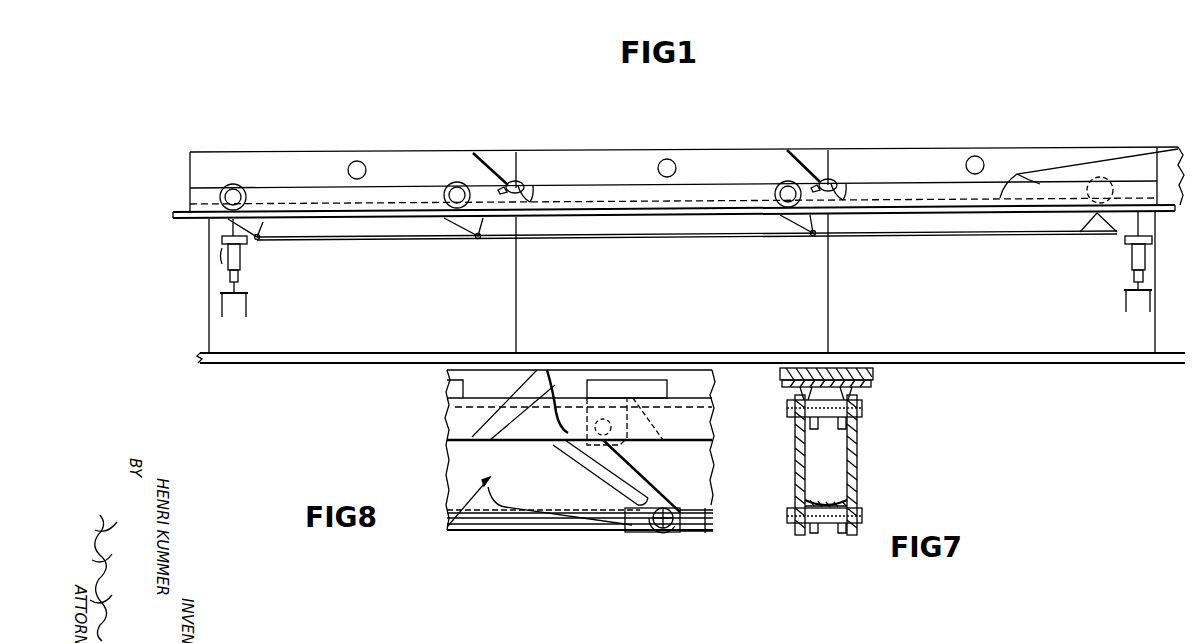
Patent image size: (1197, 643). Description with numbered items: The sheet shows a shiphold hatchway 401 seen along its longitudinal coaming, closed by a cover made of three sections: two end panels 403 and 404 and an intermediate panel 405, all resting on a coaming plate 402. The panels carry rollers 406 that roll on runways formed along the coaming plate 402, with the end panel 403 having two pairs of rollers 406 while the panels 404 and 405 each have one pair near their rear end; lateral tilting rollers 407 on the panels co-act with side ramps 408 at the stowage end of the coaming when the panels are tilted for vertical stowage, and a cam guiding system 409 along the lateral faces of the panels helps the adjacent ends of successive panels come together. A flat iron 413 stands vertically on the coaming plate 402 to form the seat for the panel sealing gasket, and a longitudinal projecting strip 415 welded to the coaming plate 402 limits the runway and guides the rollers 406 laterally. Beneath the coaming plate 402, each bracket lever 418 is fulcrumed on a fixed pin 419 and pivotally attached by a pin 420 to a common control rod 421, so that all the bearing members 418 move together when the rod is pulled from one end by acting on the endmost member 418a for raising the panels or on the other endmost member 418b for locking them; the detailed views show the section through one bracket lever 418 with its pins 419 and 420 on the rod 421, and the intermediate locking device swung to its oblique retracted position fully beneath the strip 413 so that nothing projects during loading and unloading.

In FIG. 1, the shiphold hatchway 401 is at (236, 320).
In FIG. 1, the coaming plate 402 is at (178, 212).
In FIG. 7, the coaming plate 402 is at (873, 375).
In FIG. 1, the end panel 403 is at (300, 158).
In FIG. 1, the end panel 404 is at (907, 163).
In FIG. 1, the intermediate panel 405 is at (596, 160).
In FIG. 1, the rollers 406 is at (238, 196).
In FIG. 1, the lateral tilting rollers 407 is at (360, 170).
In FIG. 1, the side ramps 408 is at (1063, 170).
In FIG. 1, the cam guiding system 409 is at (527, 177).
In FIG. 8, the flat iron 413 is at (447, 380).
In FIG. 8, the longitudinal projecting strip 415 is at (447, 396).
In FIG. 7, the longitudinal projecting strip 415 is at (875, 372).
In FIG. 1, the bracket lever 418 is at (465, 224).
In FIG. 8, the bracket lever 418 is at (559, 462).
In FIG. 7, the bracket lever 418 is at (800, 455).
In FIG. 1, the endmost bearing member 418a is at (240, 222).
In FIG. 1, the endmost bearing member 418b is at (1097, 215).
In FIG. 8, the fixed pin 419 is at (610, 422).
In FIG. 7, the fixed pin 419 is at (793, 420).
In FIG. 1, the pin 420 is at (236, 224).
In FIG. 8, the pin 420 is at (706, 512).
In FIG. 7, the pin 420 is at (797, 524).
In FIG. 1, the control rod 421 is at (348, 238).
In FIG. 8, the control rod 421 is at (540, 528).
In FIG. 7, the control rod 421 is at (835, 505).